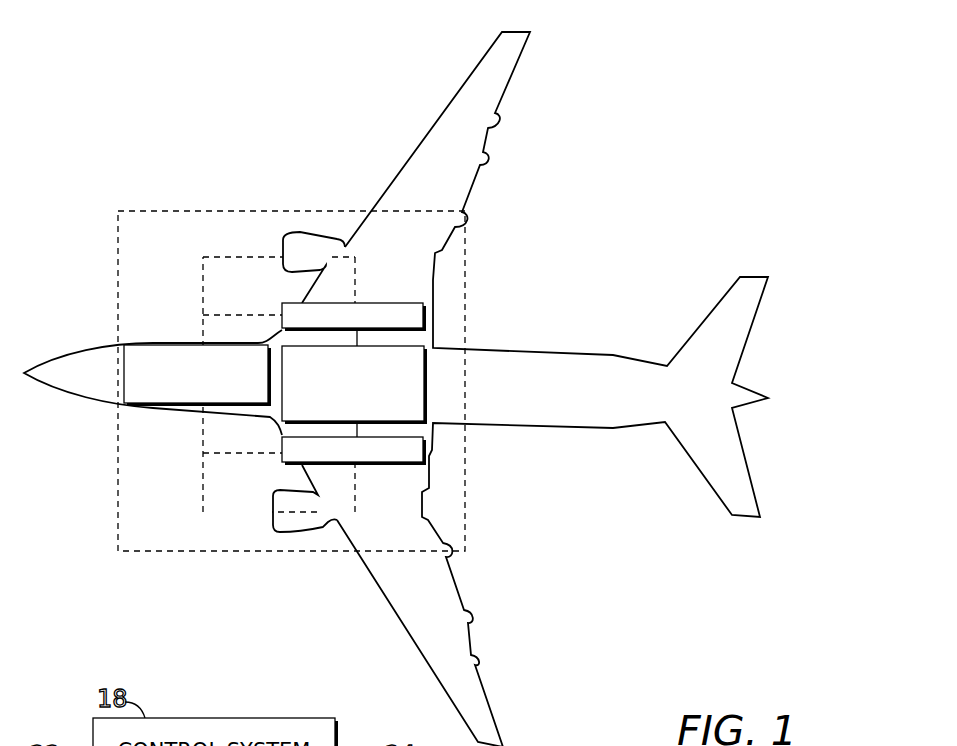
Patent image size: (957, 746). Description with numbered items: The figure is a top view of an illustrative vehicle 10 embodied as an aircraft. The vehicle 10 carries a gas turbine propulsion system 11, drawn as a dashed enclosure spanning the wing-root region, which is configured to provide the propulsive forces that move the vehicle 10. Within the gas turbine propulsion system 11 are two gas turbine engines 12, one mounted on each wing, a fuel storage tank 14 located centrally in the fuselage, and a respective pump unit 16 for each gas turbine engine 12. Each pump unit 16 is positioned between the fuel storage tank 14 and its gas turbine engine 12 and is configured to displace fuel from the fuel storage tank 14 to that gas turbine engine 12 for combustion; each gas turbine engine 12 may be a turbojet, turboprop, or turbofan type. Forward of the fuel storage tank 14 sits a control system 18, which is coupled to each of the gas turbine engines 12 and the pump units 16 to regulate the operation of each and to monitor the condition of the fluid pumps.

The vehicle 10 is at (633, 163).
The gas turbine propulsion system 11 is at (177, 210).
The gas turbine engine 12 is at (277, 247).
The fuel storage tank 14 is at (428, 383).
The pump unit 16 is at (428, 314).
The control system 18 is at (138, 408).